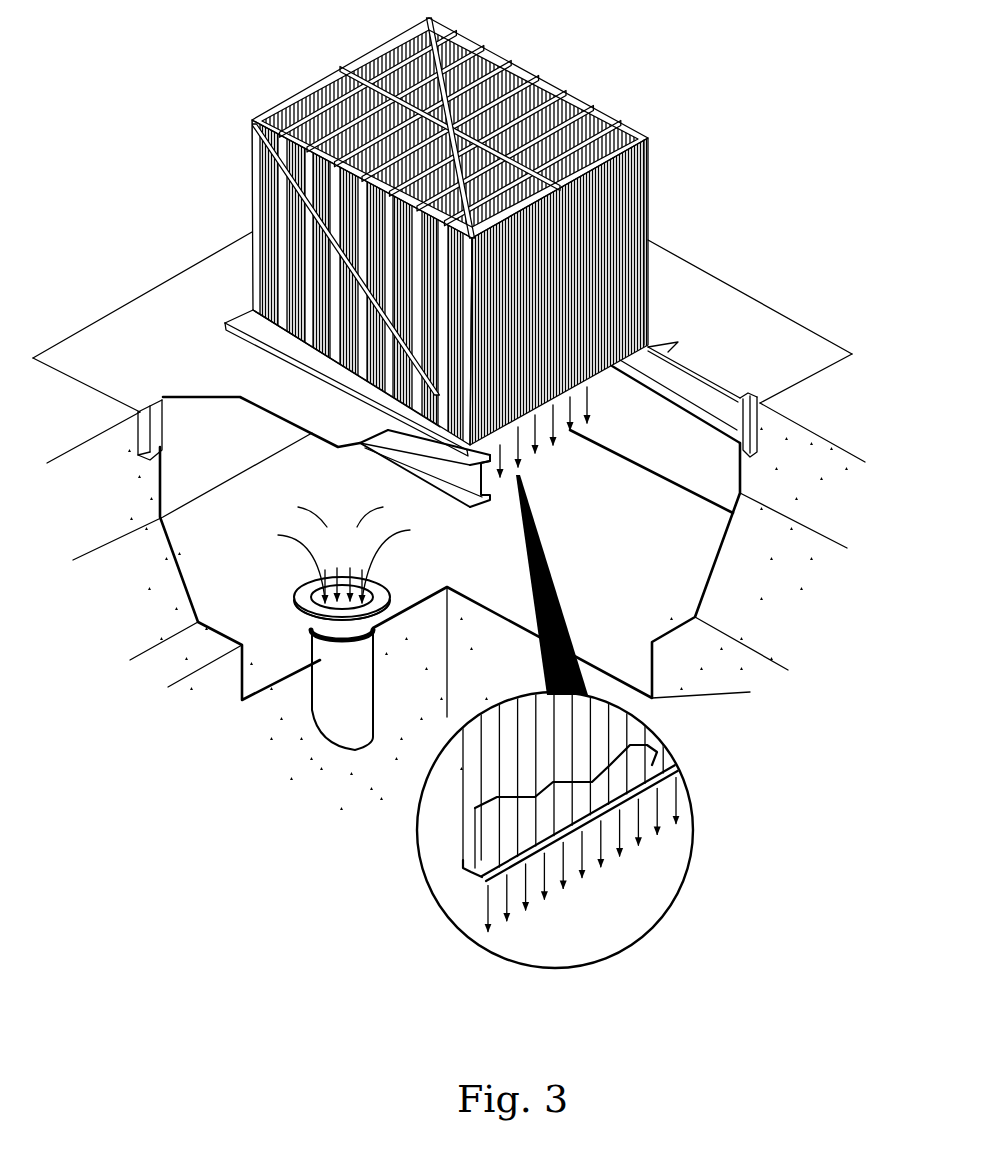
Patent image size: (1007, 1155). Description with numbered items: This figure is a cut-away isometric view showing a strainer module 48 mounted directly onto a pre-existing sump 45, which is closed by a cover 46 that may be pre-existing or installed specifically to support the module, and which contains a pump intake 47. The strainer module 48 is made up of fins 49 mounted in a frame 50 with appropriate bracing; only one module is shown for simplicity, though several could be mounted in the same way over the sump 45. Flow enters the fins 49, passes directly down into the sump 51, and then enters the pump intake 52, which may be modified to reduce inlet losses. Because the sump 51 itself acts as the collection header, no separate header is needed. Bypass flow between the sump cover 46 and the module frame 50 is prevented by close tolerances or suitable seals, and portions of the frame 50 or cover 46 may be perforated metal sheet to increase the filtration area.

The sump 45 is at (215, 455).
The cover 46 is at (722, 315).
The pump intake 47 is at (347, 687).
The strainer module 48 is at (625, 130).
The fins 49 is at (590, 300).
The frame 50 is at (453, 427).
The sump 51 is at (543, 438).
The pump intake 52 is at (344, 555).